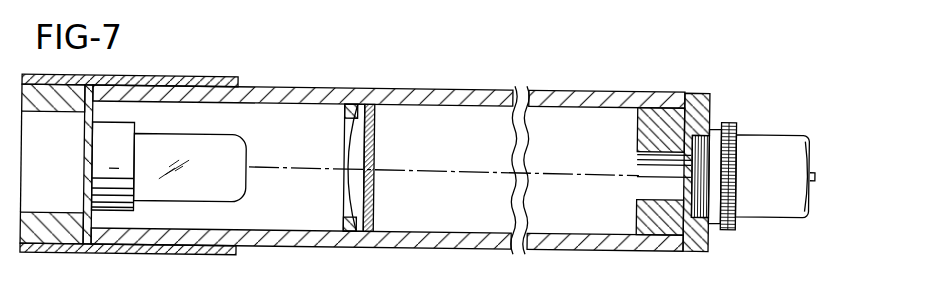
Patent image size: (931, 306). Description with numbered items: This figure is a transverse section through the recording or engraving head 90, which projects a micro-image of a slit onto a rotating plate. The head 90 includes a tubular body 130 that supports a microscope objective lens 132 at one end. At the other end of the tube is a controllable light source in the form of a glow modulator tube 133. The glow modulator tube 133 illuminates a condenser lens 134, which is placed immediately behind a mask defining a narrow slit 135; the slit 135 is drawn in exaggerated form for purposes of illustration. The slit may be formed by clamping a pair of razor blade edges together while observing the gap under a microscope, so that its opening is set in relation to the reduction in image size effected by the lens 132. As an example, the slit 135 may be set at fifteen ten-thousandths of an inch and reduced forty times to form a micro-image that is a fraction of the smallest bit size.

The recording head 90 is at (383, 82).
The tubular body 130 is at (530, 101).
The microscope objective lens 132 is at (772, 212).
The glow modulator tube 133 is at (237, 181).
The condenser lens 134 is at (353, 194).
The slit 135 is at (373, 171).